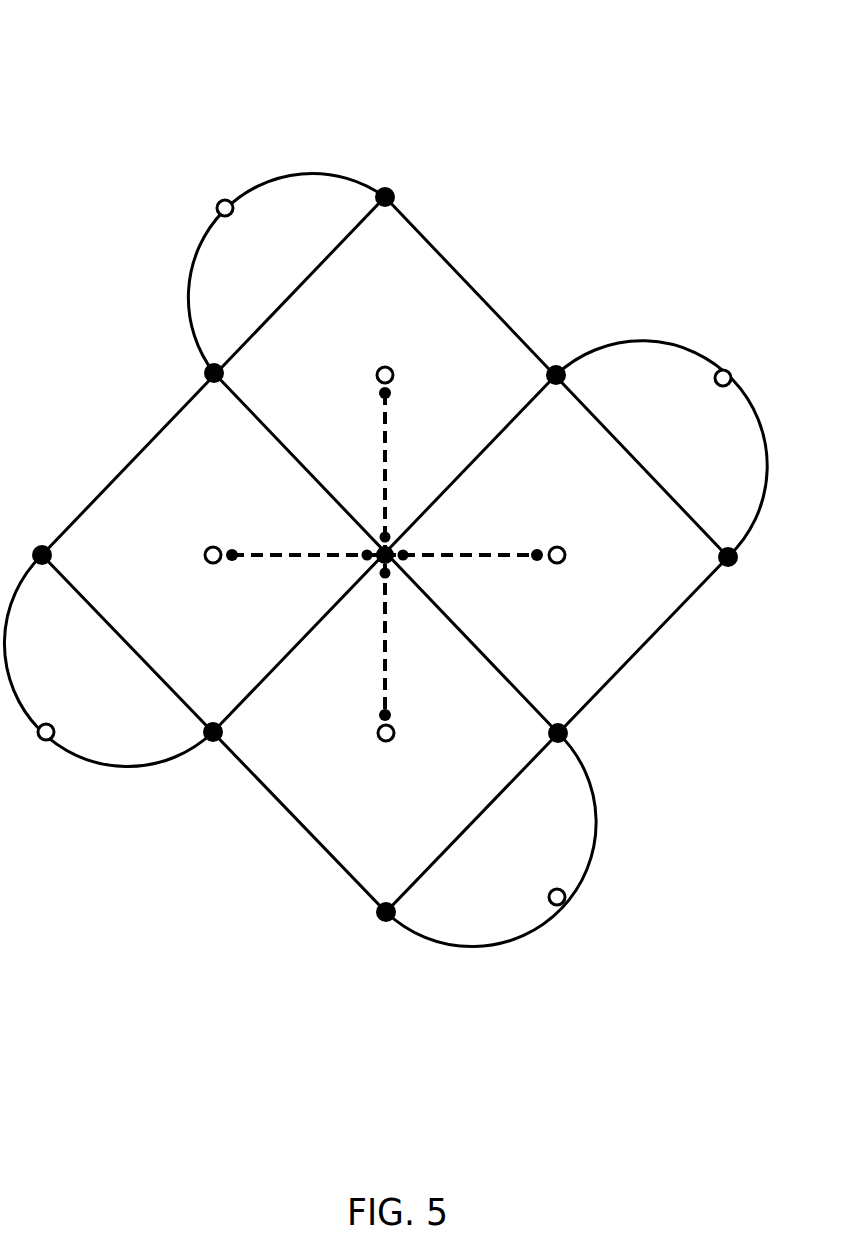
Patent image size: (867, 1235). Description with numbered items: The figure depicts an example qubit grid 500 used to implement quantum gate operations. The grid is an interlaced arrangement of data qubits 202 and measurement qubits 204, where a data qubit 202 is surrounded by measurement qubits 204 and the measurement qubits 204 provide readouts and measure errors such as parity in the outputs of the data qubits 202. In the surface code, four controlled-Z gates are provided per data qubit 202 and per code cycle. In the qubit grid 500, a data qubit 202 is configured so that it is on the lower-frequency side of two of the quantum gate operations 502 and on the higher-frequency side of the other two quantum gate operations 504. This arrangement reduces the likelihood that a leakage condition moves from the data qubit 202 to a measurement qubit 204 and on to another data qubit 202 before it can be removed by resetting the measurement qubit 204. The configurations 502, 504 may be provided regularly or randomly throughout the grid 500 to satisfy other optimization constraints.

The qubit grid 500 is at (174, 97).
The data qubit 202 is at (382, 575).
The measurement qubit 204 is at (381, 366).
The quantum gate operation (lower-frequency side) 502 is at (390, 440).
The quantum gate operation (higher-frequency side) 504 is at (500, 548).